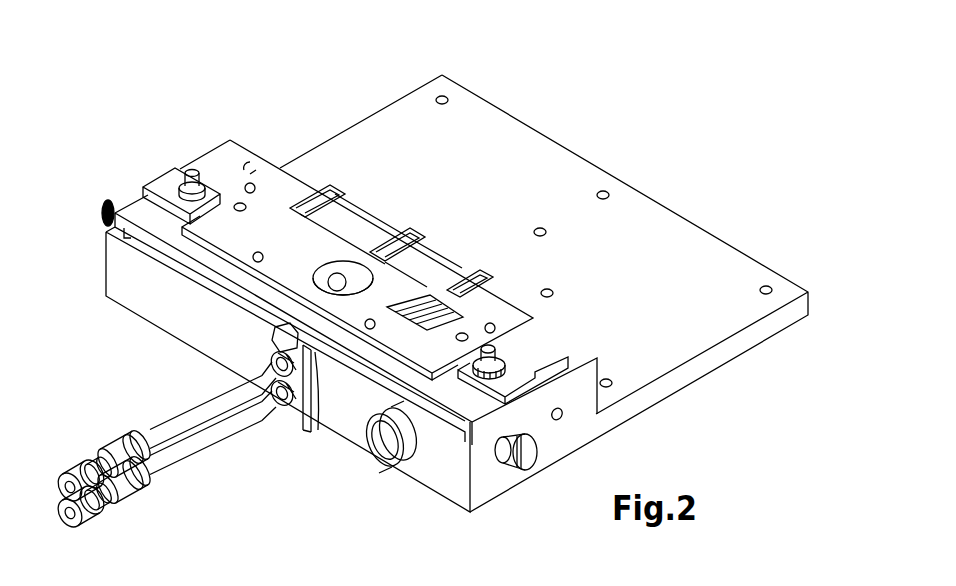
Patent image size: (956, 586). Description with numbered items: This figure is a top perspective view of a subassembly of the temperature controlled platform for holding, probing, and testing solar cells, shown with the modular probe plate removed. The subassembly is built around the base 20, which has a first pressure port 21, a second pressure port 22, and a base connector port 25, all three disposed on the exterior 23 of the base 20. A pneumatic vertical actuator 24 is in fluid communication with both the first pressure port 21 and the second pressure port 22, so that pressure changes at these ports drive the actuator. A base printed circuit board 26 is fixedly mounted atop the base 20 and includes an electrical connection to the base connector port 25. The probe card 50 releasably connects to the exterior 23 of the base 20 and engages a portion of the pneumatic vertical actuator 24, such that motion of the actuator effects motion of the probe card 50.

The base 20 is at (733, 346).
The first pressure port 21 is at (270, 337).
The second pressure port 22 is at (293, 413).
The exterior 23 is at (496, 147).
The pneumatic vertical actuator 24 is at (312, 402).
The base connector port 25 is at (407, 472).
The base printed circuit board 26 is at (447, 432).
The probe card 50 is at (527, 345).